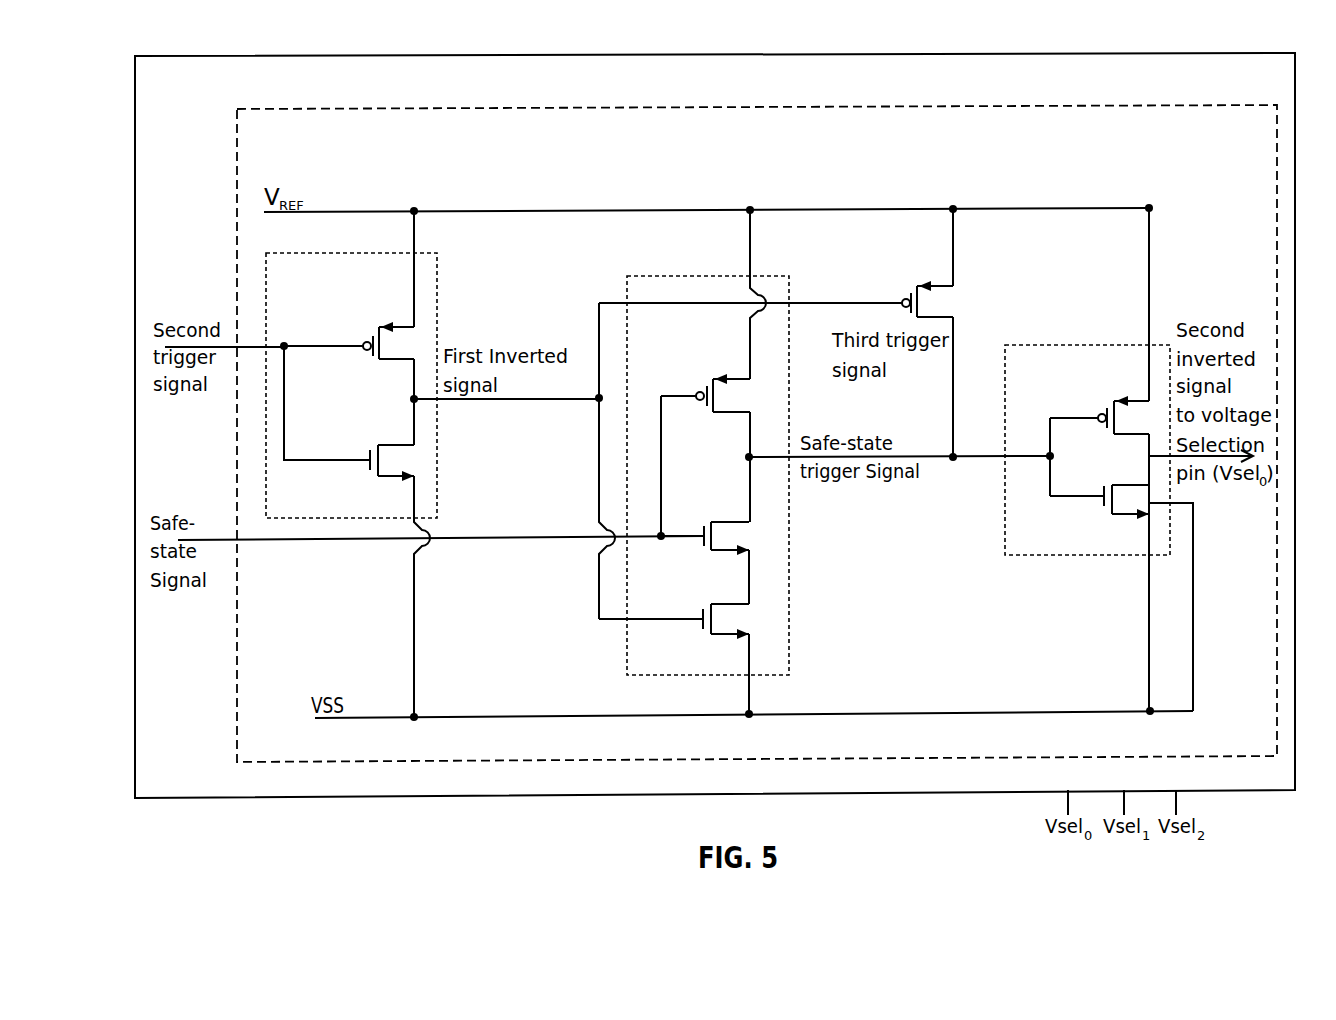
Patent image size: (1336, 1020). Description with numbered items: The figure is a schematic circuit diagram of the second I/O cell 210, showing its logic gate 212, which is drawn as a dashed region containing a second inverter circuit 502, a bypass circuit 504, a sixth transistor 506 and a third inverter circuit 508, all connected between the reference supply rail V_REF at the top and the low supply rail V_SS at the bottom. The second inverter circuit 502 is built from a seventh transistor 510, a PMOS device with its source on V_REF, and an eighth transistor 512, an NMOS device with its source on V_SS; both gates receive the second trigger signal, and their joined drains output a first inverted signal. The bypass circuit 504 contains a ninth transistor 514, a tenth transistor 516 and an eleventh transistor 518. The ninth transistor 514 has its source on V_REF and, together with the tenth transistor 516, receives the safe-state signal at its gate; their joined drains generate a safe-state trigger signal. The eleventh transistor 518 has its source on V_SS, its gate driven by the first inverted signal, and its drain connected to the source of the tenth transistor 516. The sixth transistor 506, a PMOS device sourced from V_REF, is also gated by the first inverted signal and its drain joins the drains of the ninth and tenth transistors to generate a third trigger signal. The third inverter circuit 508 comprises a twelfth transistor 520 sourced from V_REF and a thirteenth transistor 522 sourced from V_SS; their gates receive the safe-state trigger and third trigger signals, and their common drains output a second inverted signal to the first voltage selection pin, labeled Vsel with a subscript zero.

The second I/O cell 210 is at (1063, 53).
The logic gate 212 is at (1023, 105).
The second inverter circuit 502 is at (425, 253).
The bypass circuit 504 is at (641, 276).
The sixth transistor 506 is at (937, 282).
The third inverter circuit 508 is at (1024, 345).
The seventh transistor 510 is at (368, 360).
The eighth transistor 512 is at (395, 445).
The ninth transistor 514 is at (732, 378).
The tenth transistor 516 is at (732, 521).
The eleventh transistor 518 is at (726, 604).
The twelfth transistor 520 is at (1135, 400).
The thirteenth transistor 522 is at (1133, 485).